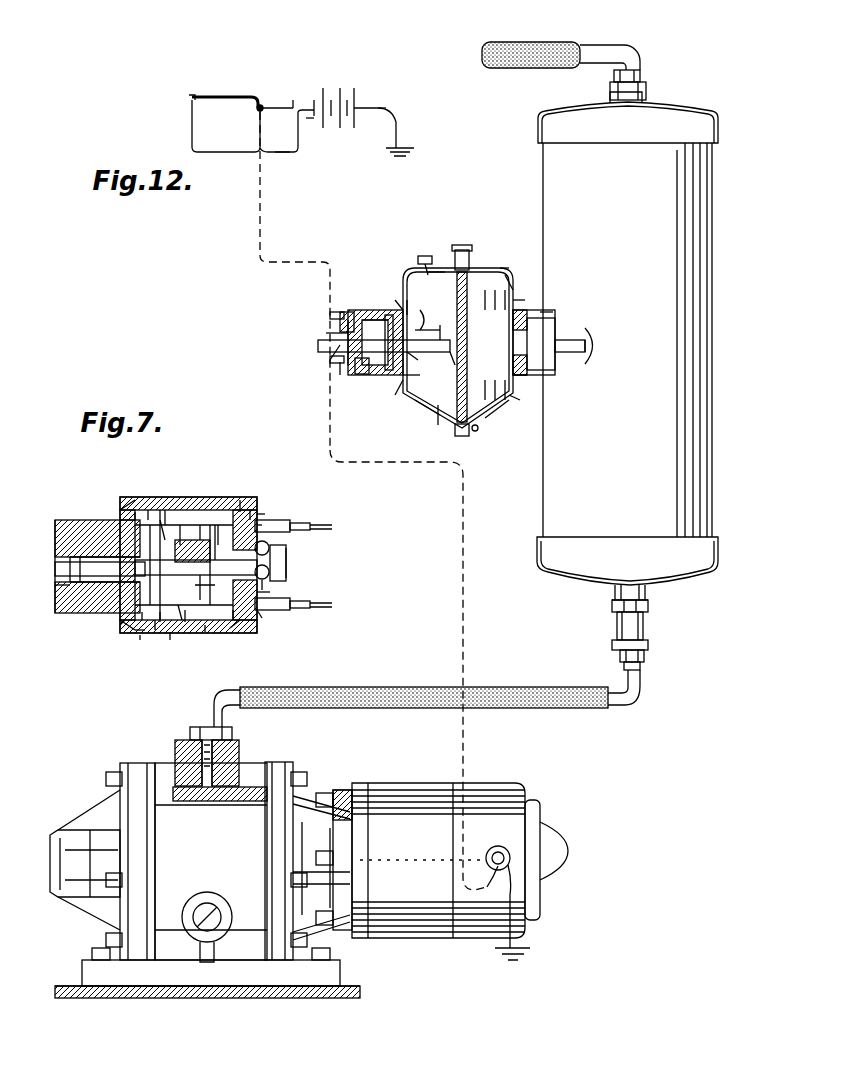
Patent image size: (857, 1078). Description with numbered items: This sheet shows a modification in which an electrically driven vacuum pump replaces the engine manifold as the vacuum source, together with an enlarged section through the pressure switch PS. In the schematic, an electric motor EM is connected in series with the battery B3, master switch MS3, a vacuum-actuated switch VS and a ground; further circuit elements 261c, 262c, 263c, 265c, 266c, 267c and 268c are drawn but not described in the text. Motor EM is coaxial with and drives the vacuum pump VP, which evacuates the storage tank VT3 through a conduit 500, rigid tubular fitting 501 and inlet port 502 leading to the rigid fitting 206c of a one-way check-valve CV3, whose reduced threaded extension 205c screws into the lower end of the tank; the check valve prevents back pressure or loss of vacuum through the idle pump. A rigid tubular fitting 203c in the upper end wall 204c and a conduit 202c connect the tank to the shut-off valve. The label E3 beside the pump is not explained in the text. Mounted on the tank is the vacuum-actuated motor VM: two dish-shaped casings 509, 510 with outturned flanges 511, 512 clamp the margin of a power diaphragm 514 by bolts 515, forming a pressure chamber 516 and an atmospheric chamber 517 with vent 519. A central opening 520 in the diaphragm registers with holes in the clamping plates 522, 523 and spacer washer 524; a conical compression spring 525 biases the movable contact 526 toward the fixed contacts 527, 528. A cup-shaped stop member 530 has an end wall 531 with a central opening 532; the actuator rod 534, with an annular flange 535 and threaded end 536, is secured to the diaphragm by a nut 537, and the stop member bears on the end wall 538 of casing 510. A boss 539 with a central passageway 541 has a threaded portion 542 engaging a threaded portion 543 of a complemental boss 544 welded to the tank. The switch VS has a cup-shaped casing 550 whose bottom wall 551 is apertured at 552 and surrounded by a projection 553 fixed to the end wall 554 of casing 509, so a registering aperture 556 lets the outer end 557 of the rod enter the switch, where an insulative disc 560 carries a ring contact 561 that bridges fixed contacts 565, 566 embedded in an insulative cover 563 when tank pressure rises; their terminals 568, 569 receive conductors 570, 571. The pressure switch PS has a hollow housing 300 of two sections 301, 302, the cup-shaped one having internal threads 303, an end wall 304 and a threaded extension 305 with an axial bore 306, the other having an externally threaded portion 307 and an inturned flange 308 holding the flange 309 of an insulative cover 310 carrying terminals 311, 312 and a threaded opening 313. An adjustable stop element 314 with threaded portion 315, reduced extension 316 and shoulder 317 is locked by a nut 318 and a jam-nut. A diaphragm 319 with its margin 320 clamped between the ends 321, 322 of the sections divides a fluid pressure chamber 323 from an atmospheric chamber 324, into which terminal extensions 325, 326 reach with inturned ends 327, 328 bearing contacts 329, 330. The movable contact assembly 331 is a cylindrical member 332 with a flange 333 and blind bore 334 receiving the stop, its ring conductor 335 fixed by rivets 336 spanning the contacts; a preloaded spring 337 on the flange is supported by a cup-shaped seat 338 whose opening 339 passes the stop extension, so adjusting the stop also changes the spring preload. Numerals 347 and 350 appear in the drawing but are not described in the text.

In FIG. 12, the conductor 261c is at (293, 100).
In FIG. 12, the switch arm 262c is at (237, 96).
In FIG. 12, the switch contact 263c is at (192, 101).
In FIG. 12, the conductor 265c is at (284, 153).
In FIG. 12, the battery terminal 266c is at (308, 118).
In FIG. 12, the conductor 267c is at (394, 112).
In FIG. 12, the ground 268c is at (406, 148).
In FIG. 12, the battery B3 is at (334, 84).
In FIG. 12, the master switch MS3 is at (222, 112).
In FIG. 7, the conduit 202c is at (530, 42).
In FIG. 7, the rigid tubular fitting 203c is at (640, 76).
In FIG. 7, the upper end wall 204c is at (690, 110).
In FIG. 7, the reduced threaded extension 205c is at (650, 591).
In FIG. 7, the rigid fitting 206c is at (641, 667).
In FIG. 7, the one-way check-valve CV3 is at (656, 625).
In FIG. 7, the storage tank VT3 is at (613, 466).
In FIG. 7, the conduit 500 is at (402, 687).
In FIG. 7, the rigid tubular fitting 501 is at (196, 727).
In FIG. 7, the inlet port 502 is at (244, 760).
In FIG. 7, the conductor 570 is at (300, 262).
In FIG. 7, the conductor 571 is at (462, 528).
In FIG. 7, the vacuum pump VP is at (131, 753).
In FIG. 7, the electric motor EM is at (434, 948).
In FIG. 7, the base E3 is at (63, 980).
In FIG. 7, the fluid-pressure actuated switch PS is at (137, 488).
In FIG. 7, the vacuum-actuated switch VS is at (380, 293).
In FIG. 7, the vacuum-actuated motor VM is at (478, 258).
In FIG. 7, the dish-shaped casing 509 is at (440, 270).
In FIG. 7, the dish-shaped casing 510 is at (497, 265).
In FIG. 7, the outturned flange 511 is at (458, 248).
In FIG. 7, the outturned flange 512 is at (470, 434).
In FIG. 7, the flexible power diaphragm 514 is at (498, 410).
In FIG. 7, the bolts 515 is at (478, 429).
In FIG. 7, the pressure chamber 516 is at (503, 278).
In FIG. 7, the atmospheric chamber 517 is at (438, 420).
In FIG. 7, the vent 519 is at (418, 256).
In FIG. 7, the central opening 520 is at (442, 352).
In FIG. 7, the clamping plate 522 is at (457, 300).
In FIG. 7, the clamping plate 523 is at (500, 292).
In FIG. 7, the spacer washer 524 is at (514, 305).
In FIG. 7, the conical compression spring 525 is at (510, 300).
In FIG. 7, the movable contact 526 is at (389, 372).
In FIG. 7, the fixed contact 527 is at (336, 362).
In FIG. 7, the fixed contact 528 is at (348, 315).
In FIG. 7, the cup-shaped stop member 530 is at (514, 380).
In FIG. 7, the end wall 531 is at (530, 315).
In FIG. 7, the central opening 532 is at (578, 336).
In FIG. 7, the actuator rod 534 is at (425, 330).
In FIG. 7, the annular flange 535 is at (442, 340).
In FIG. 7, the threaded end 536 is at (452, 358).
In FIG. 7, the nut 537 is at (516, 368).
In FIG. 7, the end wall 538 is at (515, 395).
In FIG. 7, the boss 539 is at (578, 352).
In FIG. 7, the central passageway 541 is at (545, 346).
In FIG. 7, the threaded portion 542 is at (553, 318).
In FIG. 7, the threaded portion 543 is at (530, 362).
In FIG. 7, the complemental boss 544 is at (540, 330).
In FIG. 7, the casing 550 is at (400, 300).
In FIG. 7, the bottom wall 551 is at (410, 376).
In FIG. 7, the aperture 552 is at (415, 358).
In FIG. 7, the projection 553 is at (410, 305).
In FIG. 7, the end wall 554 is at (415, 405).
In FIG. 7, the registering aperture 556 is at (424, 316).
In FIG. 7, the outer end 557 is at (368, 318).
In FIG. 7, the insulative disc 560 is at (398, 392).
In FIG. 7, the ring contact 561 is at (360, 376).
In FIG. 7, the insulative cover 563 is at (340, 318).
In FIG. 7, the fixed contact 565 is at (332, 312).
In FIG. 7, the fixed contact 566 is at (340, 368).
In FIG. 7, the terminal 568 is at (326, 333).
In FIG. 7, the terminal 569 is at (330, 358).
In FIG. 7, the hollow housing 300 is at (170, 645).
In FIG. 7, the cup-shaped section 301 is at (136, 632).
In FIG. 7, the section 302 is at (236, 633).
In FIG. 7, the internal threads 303 is at (150, 500).
In FIG. 7, the end wall 304 is at (125, 505).
In FIG. 7, the externally threaded extension 305 is at (70, 535).
In FIG. 7, the axial bore 306 is at (85, 560).
In FIG. 7, the externally threaded portion 307 is at (170, 506).
In FIG. 7, the inturned annular flange 308 is at (244, 497).
In FIG. 7, the annular flange 309 is at (256, 505).
In FIG. 7, the insulative cover member 310 is at (264, 512).
In FIG. 7, the electrical terminal 311 is at (298, 524).
In FIG. 7, the electrical terminal 312 is at (298, 610).
In FIG. 7, the threaded opening 313 is at (286, 560).
In FIG. 7, the adjustable stop element 314 is at (300, 566).
In FIG. 7, the threaded portion 315 is at (280, 577).
In FIG. 7, the reduced extension 316 is at (216, 525).
In FIG. 7, the annular shoulder 317 is at (262, 526).
In FIG. 7, the nut 318 is at (275, 548).
In FIG. 7, the flexible diaphragm 319 is at (145, 621).
In FIG. 7, the peripheral margin 320 is at (140, 640).
In FIG. 7, the inner peripheral end 321 is at (140, 512).
In FIG. 7, the inner peripheral end 322 is at (157, 633).
In FIG. 7, the fluid pressure chamber 323 is at (122, 520).
In FIG. 7, the atmospheric chamber 324 is at (225, 510).
In FIG. 7, the terminal extension 325 is at (205, 505).
In FIG. 7, the terminal extension 326 is at (205, 633).
In FIG. 7, the inner end 327 is at (160, 520).
In FIG. 7, the inner end 328 is at (160, 625).
In FIG. 7, the contact element 329 is at (185, 520).
In FIG. 7, the contact element 330 is at (180, 636).
In FIG. 7, the movable contact assembly 331 is at (192, 545).
In FIG. 7, the cylindrical member 332 is at (70, 569).
In FIG. 7, the external annular flange 333 is at (125, 625).
In FIG. 7, the blind bore 334 is at (206, 590).
In FIG. 7, the ring conductor 335 is at (170, 566).
In FIG. 7, the rivets 336 is at (185, 622).
In FIG. 7, the compression spring 337 is at (232, 622).
In FIG. 7, the cup-shaped seat 338 is at (260, 612).
In FIG. 7, the central opening 339 is at (280, 593).
In FIG. 7, the fitting end 347 is at (58, 586).
In FIG. 7, the passage 350 is at (80, 547).